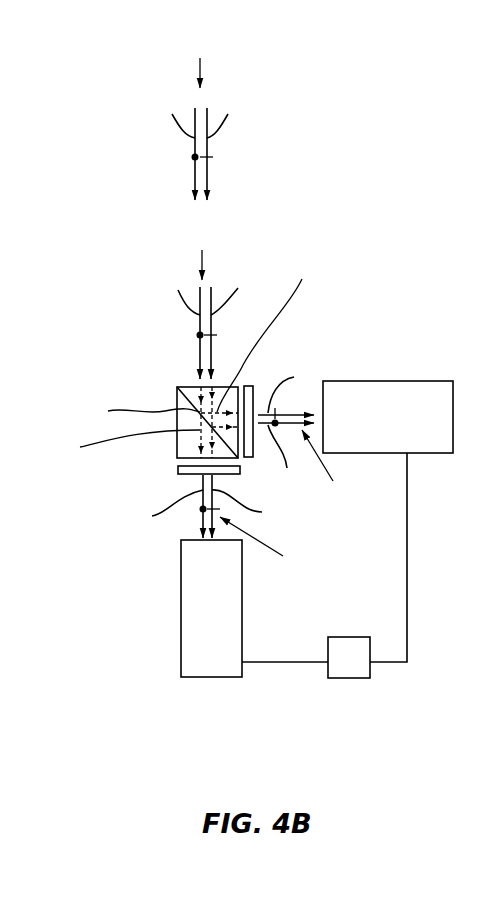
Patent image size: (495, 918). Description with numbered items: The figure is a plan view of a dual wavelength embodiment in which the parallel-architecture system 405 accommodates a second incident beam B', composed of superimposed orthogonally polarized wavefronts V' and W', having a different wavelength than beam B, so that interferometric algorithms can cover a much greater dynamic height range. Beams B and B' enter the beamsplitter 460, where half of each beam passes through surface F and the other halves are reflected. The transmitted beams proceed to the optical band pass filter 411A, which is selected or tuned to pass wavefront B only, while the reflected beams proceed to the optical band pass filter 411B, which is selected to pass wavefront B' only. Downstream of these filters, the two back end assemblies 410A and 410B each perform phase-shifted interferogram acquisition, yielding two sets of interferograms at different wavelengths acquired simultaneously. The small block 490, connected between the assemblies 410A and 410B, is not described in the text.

The system 405 is at (413, 166).
The beamsplitter 460 is at (176, 391).
The optical band pass filter 411A is at (176, 471).
The optical band pass filter 411B is at (251, 384).
The back end assembly 410A is at (178, 668).
The back end assembly 410B is at (385, 378).
The processor 490 is at (346, 681).